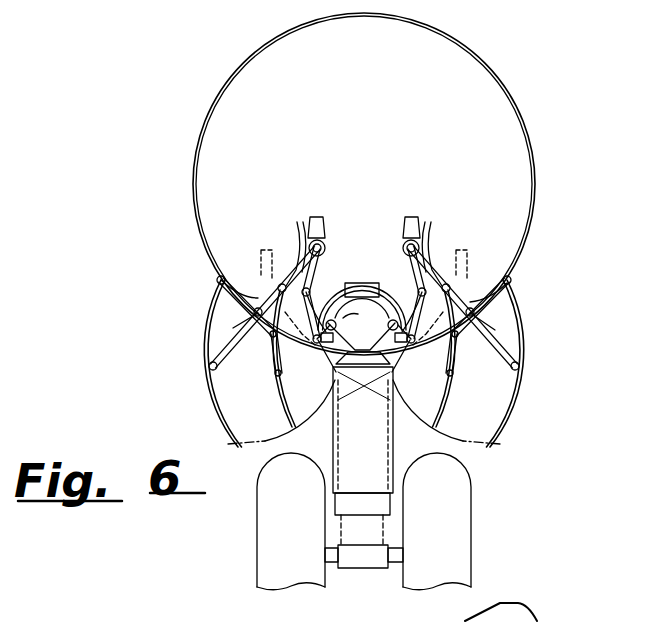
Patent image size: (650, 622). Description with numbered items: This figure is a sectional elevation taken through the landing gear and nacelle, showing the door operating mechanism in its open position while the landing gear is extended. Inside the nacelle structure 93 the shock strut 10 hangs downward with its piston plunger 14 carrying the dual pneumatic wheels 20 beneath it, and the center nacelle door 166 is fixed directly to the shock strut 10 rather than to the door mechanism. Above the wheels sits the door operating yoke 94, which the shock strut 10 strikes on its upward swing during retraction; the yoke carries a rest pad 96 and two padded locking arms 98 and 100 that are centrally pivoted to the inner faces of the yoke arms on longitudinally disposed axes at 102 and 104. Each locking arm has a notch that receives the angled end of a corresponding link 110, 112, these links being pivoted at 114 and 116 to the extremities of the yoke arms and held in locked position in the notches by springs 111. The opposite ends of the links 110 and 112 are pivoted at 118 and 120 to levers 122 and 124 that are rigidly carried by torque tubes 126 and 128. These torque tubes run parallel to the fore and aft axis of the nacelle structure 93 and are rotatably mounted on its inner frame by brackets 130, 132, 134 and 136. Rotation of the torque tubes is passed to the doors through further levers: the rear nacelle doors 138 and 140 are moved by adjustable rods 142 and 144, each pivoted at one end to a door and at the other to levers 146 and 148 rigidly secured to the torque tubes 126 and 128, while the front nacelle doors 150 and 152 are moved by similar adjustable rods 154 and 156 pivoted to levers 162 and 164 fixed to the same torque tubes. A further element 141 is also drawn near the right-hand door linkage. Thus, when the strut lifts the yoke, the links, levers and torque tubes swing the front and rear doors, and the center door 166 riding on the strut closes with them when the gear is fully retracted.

The nacelle structure 93 is at (529, 112).
The bracket 134 is at (320, 216).
The bracket 130 is at (312, 216).
The torque tube 126 is at (330, 232).
The lever 122 is at (336, 258).
The pivot 120 is at (308, 244).
The bracket 136 is at (414, 216).
The torque tube 128 is at (422, 214).
The bracket 132 is at (408, 240).
The lever 124 is at (432, 230).
The pivot 118 is at (272, 290).
The lever 146 is at (296, 240).
The lever 148 is at (482, 242).
The link 112 is at (473, 278).
The lever 162 is at (256, 292).
The lever 164 is at (512, 286).
The adjustable rod 154 is at (233, 328).
The adjustable rod 156 is at (495, 330).
The front nacelle door 150 is at (216, 412).
The front nacelle door 152 is at (516, 392).
The rear nacelle door 138 is at (288, 410).
The rear nacelle door 140 is at (440, 410).
The adjustable rod 142 is at (268, 363).
The adjustable rod 144 is at (457, 362).
The pivot 114 is at (322, 368).
The pivot 116 is at (412, 350).
The link 141 is at (406, 376).
The link 110 is at (320, 300).
The padded locking arm 100 is at (383, 294).
The door operating yoke 94 is at (374, 283).
The rest pad 96 is at (343, 300).
The pivot axis 104 is at (395, 320).
The padded locking arm 98 is at (353, 313).
The pivot axis 102 is at (337, 326).
The spring 111 is at (364, 394).
The center nacelle door 166 is at (333, 462).
The shock strut 10 is at (397, 430).
The piston plunger 14 is at (334, 558).
The pneumatic wheels 20 is at (257, 535).